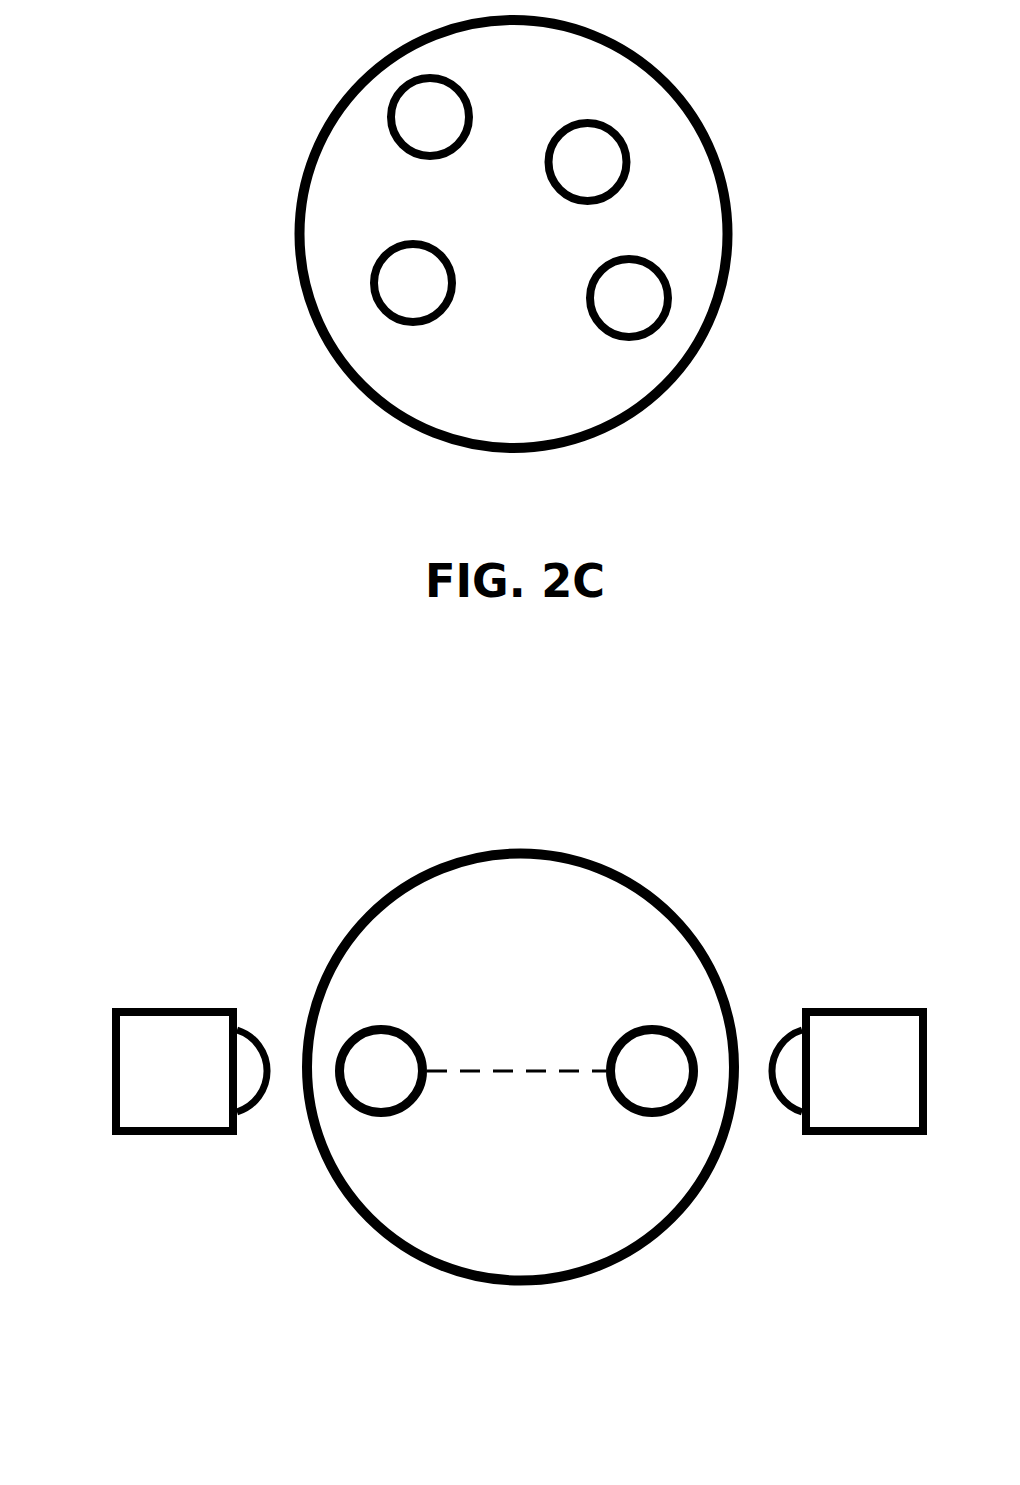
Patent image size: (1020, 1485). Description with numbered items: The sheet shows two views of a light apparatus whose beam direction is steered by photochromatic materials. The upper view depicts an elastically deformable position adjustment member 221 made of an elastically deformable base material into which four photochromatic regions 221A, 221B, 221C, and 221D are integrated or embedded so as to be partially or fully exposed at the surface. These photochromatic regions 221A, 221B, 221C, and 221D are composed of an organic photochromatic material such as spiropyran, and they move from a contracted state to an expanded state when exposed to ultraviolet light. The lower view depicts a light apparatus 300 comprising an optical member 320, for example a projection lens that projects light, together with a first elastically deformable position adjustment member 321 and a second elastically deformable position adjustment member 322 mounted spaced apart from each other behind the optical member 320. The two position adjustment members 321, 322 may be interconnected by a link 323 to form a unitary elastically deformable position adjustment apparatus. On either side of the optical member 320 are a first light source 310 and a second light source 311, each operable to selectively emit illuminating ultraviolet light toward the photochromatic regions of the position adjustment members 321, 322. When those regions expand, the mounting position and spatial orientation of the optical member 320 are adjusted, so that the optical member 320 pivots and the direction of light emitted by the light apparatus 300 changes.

In FIG. 2C, the elastically deformable position adjustment member 221 is at (474, 237).
In FIG. 2C, the photochromatic region 221A is at (400, 136).
In FIG. 2C, the photochromatic region 221B is at (558, 176).
In FIG. 2C, the photochromatic region 221C is at (600, 312).
In FIG. 2C, the photochromatic region 221D is at (383, 300).
In FIG. 3A, the light apparatus 300 is at (135, 769).
In FIG. 3A, the first light source 310 is at (135, 1086).
In FIG. 3A, the second light source 311 is at (842, 1086).
In FIG. 3A, the optical member 320 is at (360, 920).
In FIG. 3A, the first elastically deformable position adjustment member 321 is at (352, 1086).
In FIG. 3A, the second elastically deformable position adjustment member 322 is at (622, 1086).
In FIG. 3A, the link 323 is at (523, 1070).